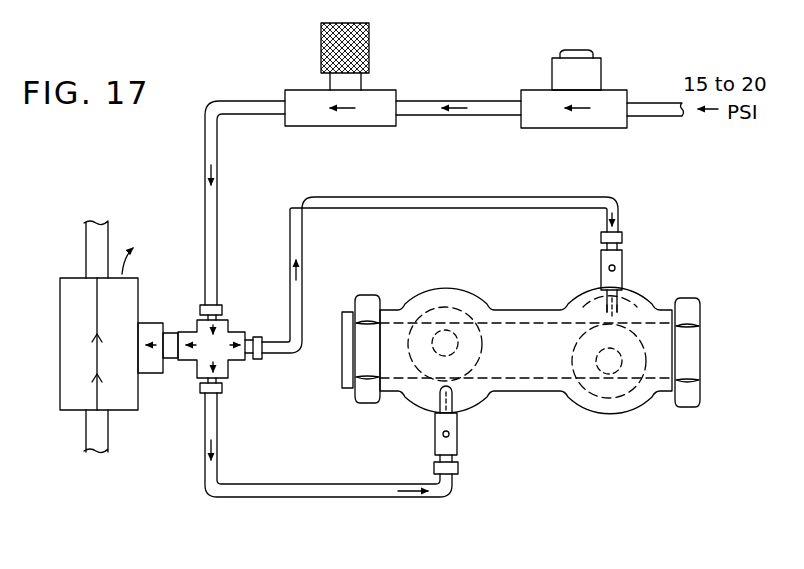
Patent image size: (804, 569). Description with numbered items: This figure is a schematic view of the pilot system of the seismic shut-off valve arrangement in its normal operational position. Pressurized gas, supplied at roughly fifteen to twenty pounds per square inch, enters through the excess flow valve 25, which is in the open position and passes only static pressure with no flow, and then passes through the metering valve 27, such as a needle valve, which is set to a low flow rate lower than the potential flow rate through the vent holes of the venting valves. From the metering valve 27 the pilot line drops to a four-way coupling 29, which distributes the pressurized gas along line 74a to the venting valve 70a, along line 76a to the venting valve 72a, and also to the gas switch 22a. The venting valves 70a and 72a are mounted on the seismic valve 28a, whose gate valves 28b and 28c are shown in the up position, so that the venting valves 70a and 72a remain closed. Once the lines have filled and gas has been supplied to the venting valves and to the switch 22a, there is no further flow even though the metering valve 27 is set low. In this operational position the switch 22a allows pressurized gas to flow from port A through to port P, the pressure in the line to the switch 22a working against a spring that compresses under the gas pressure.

The metering valve 27 is at (287, 92).
The excess flow valve 25 is at (552, 74).
The gas switch 22a is at (139, 393).
The four-way coupling 29 is at (243, 330).
The line 74a is at (460, 197).
The venting valve 70a is at (624, 268).
The seismic valve 28a is at (517, 410).
The gate valve 28b is at (423, 318).
The gate valve 28c is at (628, 392).
The venting valve 72a is at (433, 428).
The line 76a is at (318, 498).